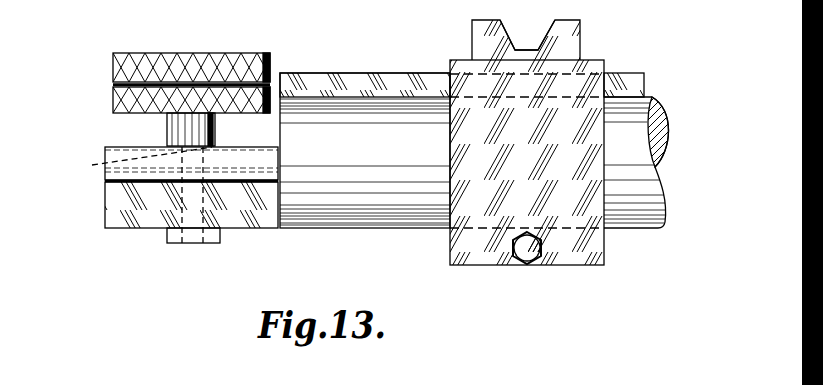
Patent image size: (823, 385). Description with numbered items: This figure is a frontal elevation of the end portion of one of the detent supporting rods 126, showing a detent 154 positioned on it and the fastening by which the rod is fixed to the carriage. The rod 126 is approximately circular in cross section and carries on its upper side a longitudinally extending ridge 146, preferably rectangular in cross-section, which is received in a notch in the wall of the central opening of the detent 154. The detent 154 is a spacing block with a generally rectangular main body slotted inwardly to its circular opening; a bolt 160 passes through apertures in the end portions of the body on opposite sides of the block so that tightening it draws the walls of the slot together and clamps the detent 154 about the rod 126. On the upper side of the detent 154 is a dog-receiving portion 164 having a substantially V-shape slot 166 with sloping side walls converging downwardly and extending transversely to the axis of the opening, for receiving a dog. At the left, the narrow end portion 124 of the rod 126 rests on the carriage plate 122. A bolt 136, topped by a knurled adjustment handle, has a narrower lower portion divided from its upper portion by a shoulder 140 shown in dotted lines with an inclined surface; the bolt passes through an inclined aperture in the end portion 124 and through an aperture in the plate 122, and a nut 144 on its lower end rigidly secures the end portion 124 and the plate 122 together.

The carriage plate 122 is at (105, 210).
The narrow end portion 124 is at (105, 175).
The detent supporting rod 126 is at (375, 229).
The bolt 136 is at (113, 70).
The shoulder 140 is at (135, 160).
The nut 144 is at (200, 240).
The ridge 146 is at (368, 79).
The detent 154 is at (605, 257).
The bolt 160 is at (527, 263).
The dog-receiving portion 164 is at (581, 37).
The V-shape slot 166 is at (505, 33).